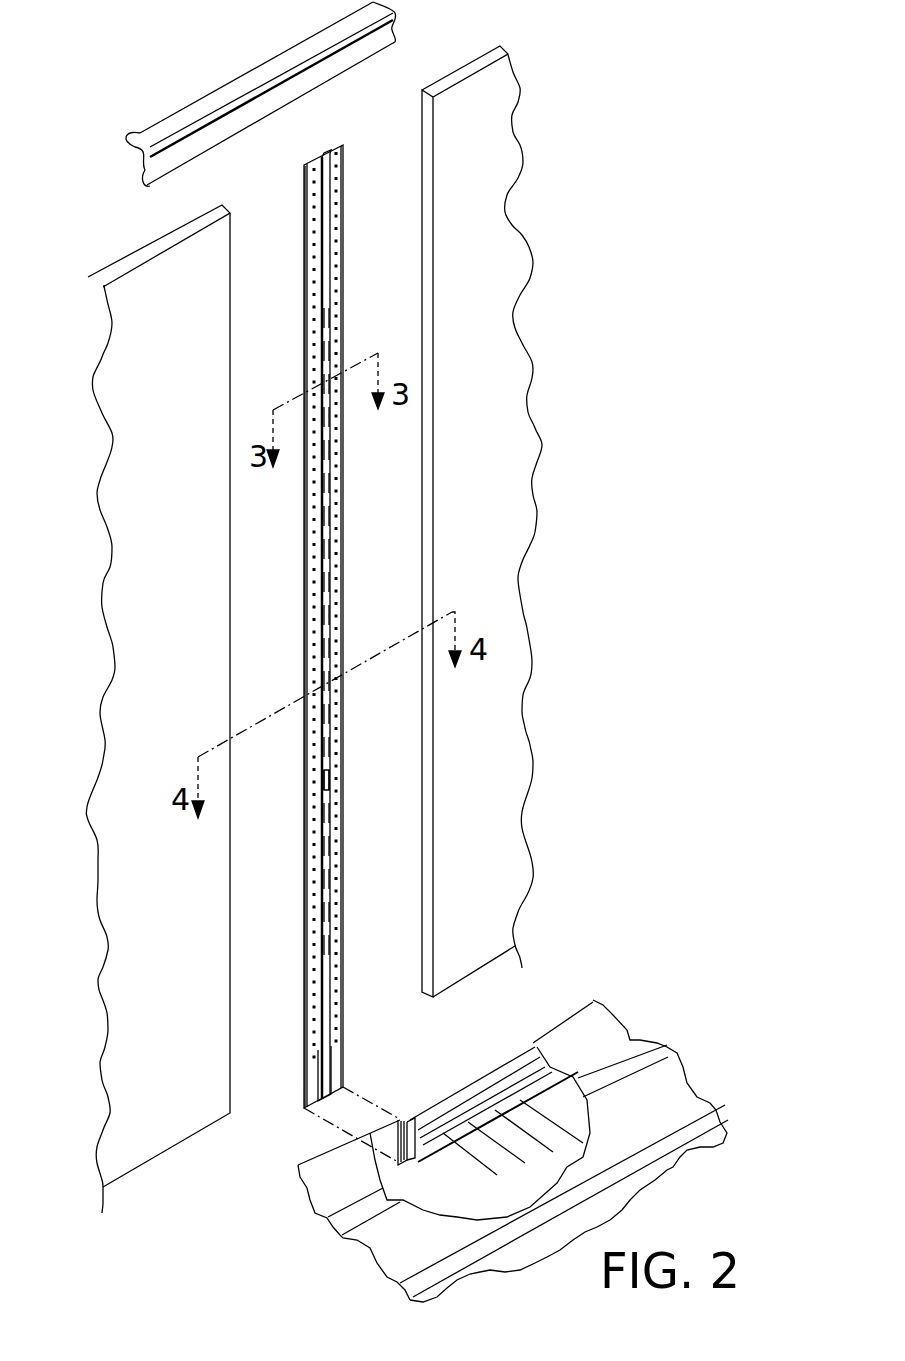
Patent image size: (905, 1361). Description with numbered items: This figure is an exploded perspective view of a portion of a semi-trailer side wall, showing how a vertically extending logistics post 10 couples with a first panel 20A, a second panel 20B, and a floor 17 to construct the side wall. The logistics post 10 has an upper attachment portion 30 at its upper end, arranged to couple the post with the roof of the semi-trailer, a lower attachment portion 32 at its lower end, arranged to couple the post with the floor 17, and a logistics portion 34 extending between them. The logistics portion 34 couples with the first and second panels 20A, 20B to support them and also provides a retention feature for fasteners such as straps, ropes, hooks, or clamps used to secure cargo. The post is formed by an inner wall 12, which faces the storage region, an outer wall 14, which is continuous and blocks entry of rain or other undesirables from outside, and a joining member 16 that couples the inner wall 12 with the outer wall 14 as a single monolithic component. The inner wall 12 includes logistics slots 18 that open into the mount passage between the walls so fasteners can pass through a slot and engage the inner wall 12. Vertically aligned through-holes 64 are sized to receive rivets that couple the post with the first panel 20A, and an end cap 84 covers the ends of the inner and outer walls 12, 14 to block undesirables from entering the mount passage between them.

The logistics post 10 is at (278, 221).
The inner wall 12 is at (345, 212).
The outer wall 14 is at (329, 144).
The joining member 16 is at (346, 554).
The floor 17 is at (675, 1017).
The logistics slots 18 is at (328, 777).
The first panel 20A is at (114, 509).
The second panel 20B is at (510, 390).
The upper attachment portion 30 is at (312, 185).
The lower attachment portion 32 is at (310, 1090).
The logistics portion 34 is at (310, 590).
The through-holes 64 is at (340, 893).
The end cap 84 is at (296, 667).